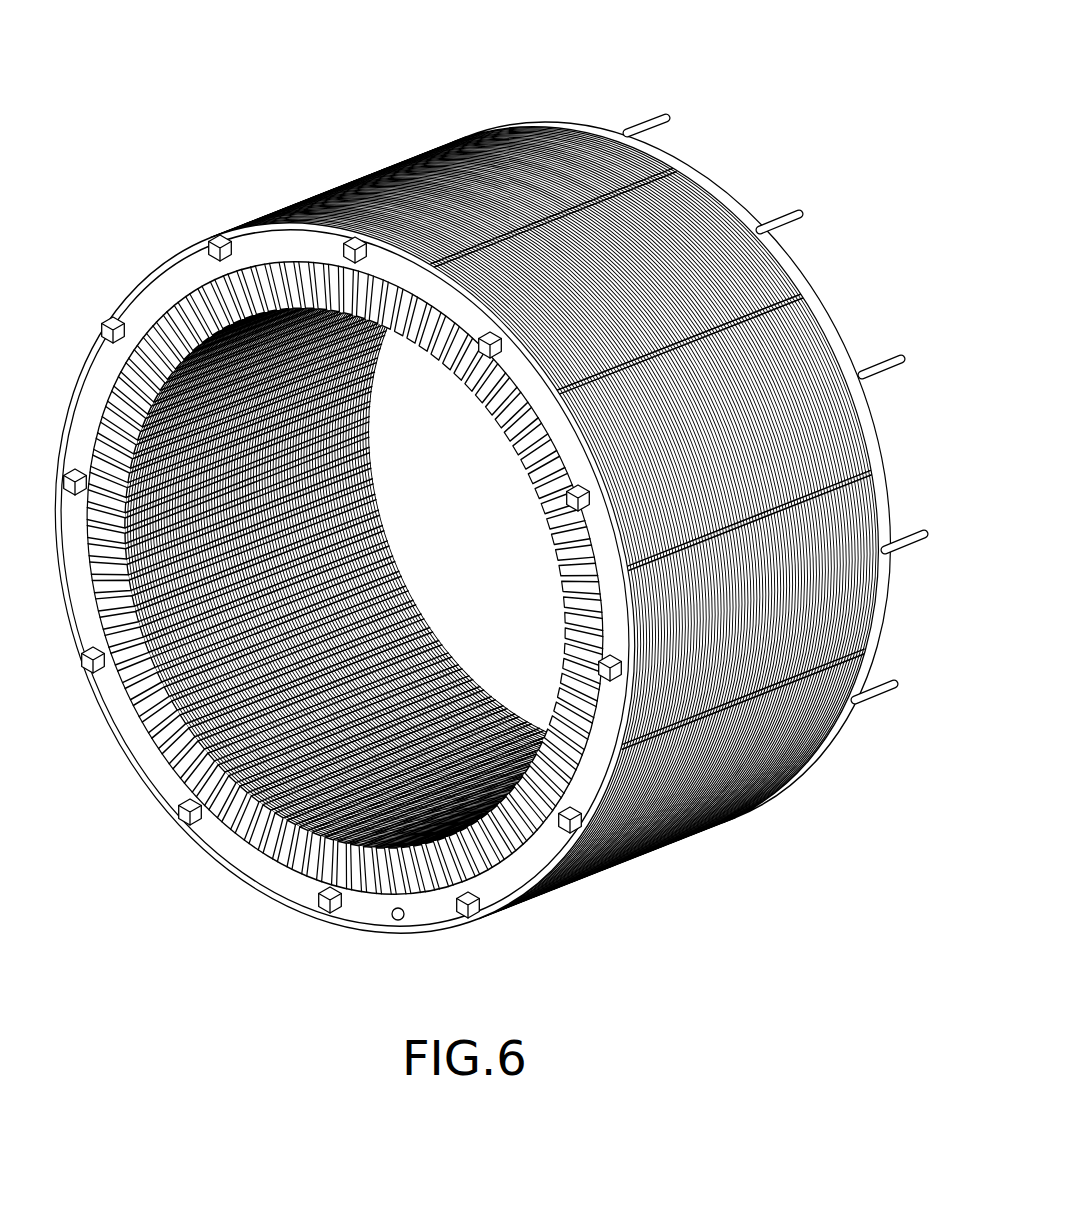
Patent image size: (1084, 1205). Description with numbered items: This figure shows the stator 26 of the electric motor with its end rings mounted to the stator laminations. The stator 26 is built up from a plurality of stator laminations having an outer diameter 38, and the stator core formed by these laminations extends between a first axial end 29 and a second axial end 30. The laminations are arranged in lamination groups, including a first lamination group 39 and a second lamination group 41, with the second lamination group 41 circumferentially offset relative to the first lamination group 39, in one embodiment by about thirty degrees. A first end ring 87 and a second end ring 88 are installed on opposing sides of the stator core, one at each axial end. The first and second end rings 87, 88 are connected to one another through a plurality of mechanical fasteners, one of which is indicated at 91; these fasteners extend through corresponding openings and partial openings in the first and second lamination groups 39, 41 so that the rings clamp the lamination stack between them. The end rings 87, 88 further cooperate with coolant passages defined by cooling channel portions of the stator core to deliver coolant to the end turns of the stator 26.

The stator 26 is at (171, 134).
The first axial end 29 is at (369, 578).
The second axial end 30 is at (723, 429).
The outer diameter 38 is at (595, 479).
The first lamination group 39 is at (681, 445).
The second lamination group 41 is at (595, 479).
The first end ring 87 is at (368, 577).
The second end ring 88 is at (870, 446).
The mechanical fastener 91 is at (613, 677).